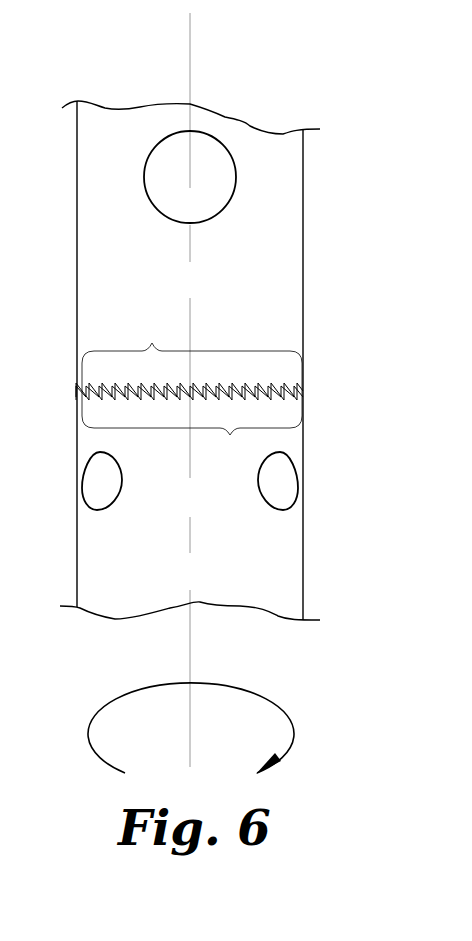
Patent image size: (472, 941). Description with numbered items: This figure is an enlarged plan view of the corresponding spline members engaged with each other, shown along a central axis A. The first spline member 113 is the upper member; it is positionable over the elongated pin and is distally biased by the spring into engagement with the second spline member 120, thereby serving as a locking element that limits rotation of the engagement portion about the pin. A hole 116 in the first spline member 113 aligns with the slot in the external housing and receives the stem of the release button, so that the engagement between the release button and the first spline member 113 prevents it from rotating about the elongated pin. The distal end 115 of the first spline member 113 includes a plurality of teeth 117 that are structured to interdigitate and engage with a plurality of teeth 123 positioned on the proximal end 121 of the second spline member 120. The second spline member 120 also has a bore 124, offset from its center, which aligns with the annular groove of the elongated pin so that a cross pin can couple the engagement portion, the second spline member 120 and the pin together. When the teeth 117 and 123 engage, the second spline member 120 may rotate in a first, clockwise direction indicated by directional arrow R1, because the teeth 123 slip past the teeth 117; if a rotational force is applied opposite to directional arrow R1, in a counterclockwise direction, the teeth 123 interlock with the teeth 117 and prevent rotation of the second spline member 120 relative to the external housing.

The longitudinal axis A is at (191, 58).
The first spline member 113 is at (303, 270).
The distal end 115 is at (305, 376).
The hole 116 is at (223, 187).
The teeth 117 is at (158, 391).
The second spline member 120 is at (215, 487).
The proximal end 121 is at (158, 424).
The teeth 123 is at (189, 428).
The bore 124 is at (103, 487).
The directional arrow R1 is at (233, 685).